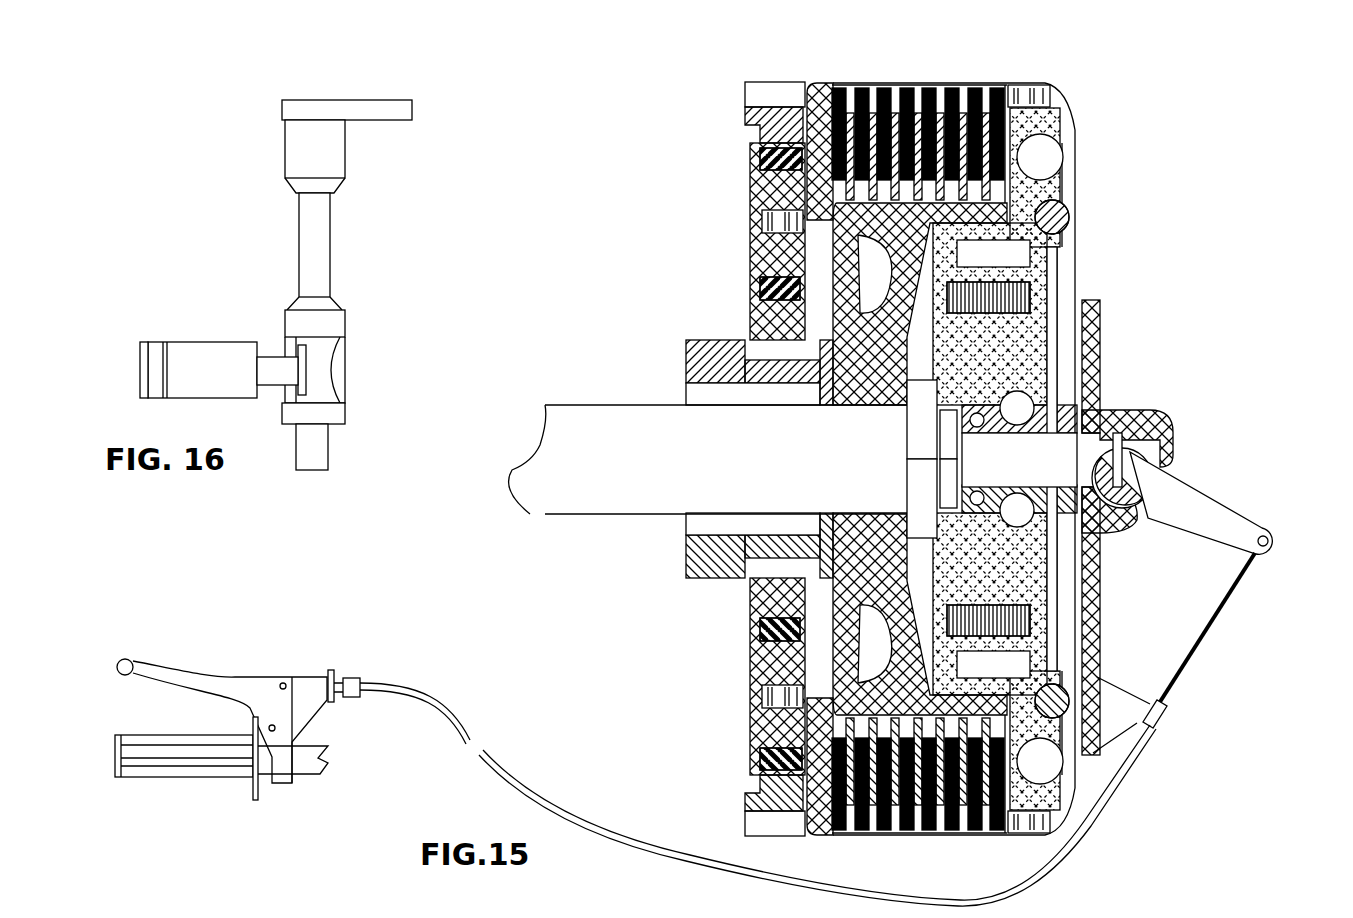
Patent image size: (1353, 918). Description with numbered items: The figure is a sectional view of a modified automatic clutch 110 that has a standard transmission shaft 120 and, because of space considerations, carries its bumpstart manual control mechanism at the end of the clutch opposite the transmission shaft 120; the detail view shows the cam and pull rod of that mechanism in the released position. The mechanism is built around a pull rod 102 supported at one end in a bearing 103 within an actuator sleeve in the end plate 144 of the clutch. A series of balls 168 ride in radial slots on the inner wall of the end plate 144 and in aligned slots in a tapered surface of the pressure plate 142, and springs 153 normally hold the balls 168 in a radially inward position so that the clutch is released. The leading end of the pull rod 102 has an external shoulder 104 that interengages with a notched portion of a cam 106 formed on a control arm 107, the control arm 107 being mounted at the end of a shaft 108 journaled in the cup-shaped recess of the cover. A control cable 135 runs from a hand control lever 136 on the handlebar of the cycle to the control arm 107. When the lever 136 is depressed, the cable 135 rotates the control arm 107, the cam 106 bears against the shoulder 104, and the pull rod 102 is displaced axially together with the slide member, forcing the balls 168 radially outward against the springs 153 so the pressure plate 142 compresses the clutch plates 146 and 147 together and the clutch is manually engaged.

In FIG. 15, the pull rod 102 is at (1160, 417).
In FIG. 15, the bearing 103 is at (1035, 383).
In FIG. 15, the external flange or shoulder 104 is at (1124, 440).
In FIG. 15, the cam 106 is at (1150, 500).
In FIG. 15, the control arm 107 is at (1222, 537).
In FIG. 16, the control arm 107 is at (390, 112).
In FIG. 16, the shaft 108 is at (330, 243).
In FIG. 15, the automatic clutch 110 is at (748, 182).
In FIG. 15, the transmission shaft 120 is at (655, 418).
In FIG. 15, the control cable 135 is at (1187, 663).
In FIG. 15, the hand control lever 136 is at (165, 675).
In FIG. 15, the pressure plate 142 is at (1027, 207).
In FIG. 15, the end plate 144 is at (1060, 242).
In FIG. 15, the clutch plates 146 is at (902, 83).
In FIG. 15, the clutch plates 147 is at (1000, 190).
In FIG. 15, the springs 153 is at (1007, 298).
In FIG. 15, the balls 168 is at (1052, 400).